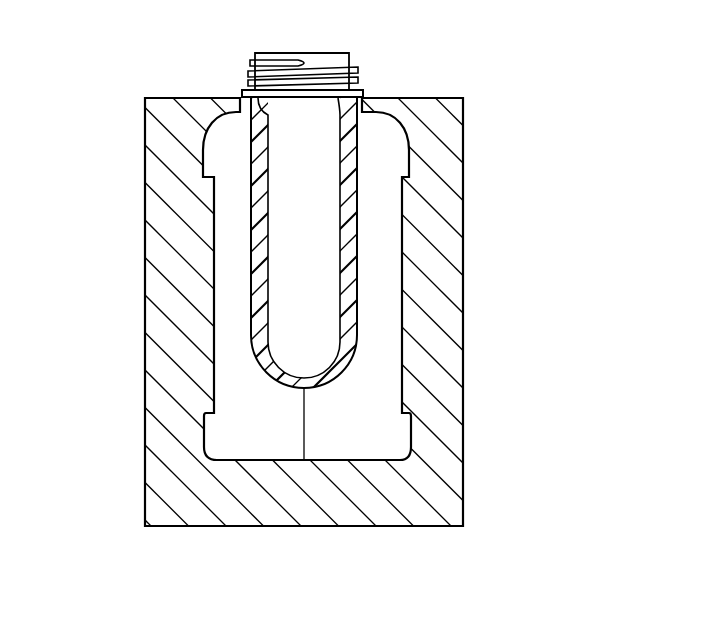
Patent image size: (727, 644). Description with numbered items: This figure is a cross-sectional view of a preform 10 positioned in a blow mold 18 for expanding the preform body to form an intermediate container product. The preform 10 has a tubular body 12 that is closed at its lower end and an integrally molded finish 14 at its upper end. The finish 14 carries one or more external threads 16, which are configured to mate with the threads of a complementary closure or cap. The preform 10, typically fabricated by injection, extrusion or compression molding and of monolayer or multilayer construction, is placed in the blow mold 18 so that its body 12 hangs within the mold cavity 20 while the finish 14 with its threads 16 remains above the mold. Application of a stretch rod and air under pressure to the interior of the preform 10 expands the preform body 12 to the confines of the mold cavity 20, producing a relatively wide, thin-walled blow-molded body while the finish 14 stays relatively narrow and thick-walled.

The preform 10 is at (390, 75).
The tubular body 12 is at (258, 365).
The finish 14 is at (352, 53).
The external threads 16 is at (250, 75).
The blow mold 18 is at (463, 135).
The mold cavity 20 is at (386, 284).